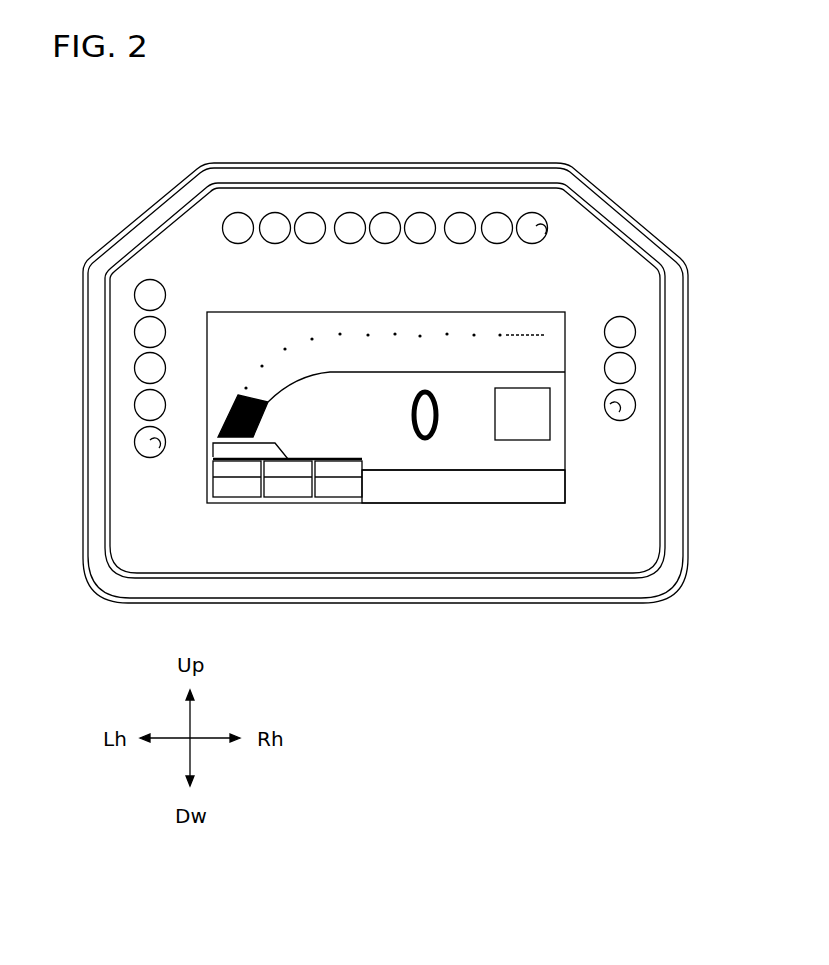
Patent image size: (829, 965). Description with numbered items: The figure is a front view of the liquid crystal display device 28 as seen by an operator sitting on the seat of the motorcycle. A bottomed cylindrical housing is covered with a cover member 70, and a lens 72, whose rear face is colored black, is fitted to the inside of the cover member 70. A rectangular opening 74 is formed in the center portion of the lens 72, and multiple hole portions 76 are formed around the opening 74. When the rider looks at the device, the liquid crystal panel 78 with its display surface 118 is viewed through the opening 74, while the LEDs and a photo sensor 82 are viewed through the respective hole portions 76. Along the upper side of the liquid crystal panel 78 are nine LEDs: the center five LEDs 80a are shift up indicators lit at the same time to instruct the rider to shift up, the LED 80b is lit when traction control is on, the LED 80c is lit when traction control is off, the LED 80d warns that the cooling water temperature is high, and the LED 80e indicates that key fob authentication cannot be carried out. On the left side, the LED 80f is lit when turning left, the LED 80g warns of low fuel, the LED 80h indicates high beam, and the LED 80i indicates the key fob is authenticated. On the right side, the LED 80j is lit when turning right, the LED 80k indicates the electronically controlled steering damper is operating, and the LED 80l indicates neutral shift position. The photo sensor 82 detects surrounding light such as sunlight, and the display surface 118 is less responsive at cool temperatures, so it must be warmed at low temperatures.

The liquid crystal display device 28 is at (404, 401).
The cover member 70 is at (310, 586).
The lens 72 is at (634, 518).
The opening 74 is at (386, 407).
The hole portions 76 is at (541, 235).
The liquid crystal panel 78 is at (556, 504).
The LED 80a is at (460, 225).
The LED 80b is at (274, 225).
The LED 80c is at (240, 225).
The LED 80d is at (497, 225).
The LED 80e is at (532, 225).
The LED 80f is at (146, 333).
The LED 80g is at (146, 369).
The LED 80h is at (146, 406).
The LED 80i is at (146, 443).
The LED 80j is at (625, 334).
The LED 80k is at (625, 371).
The LED 80l is at (625, 408).
The photo sensor 82 is at (146, 295).
The display surface 118 is at (284, 322).